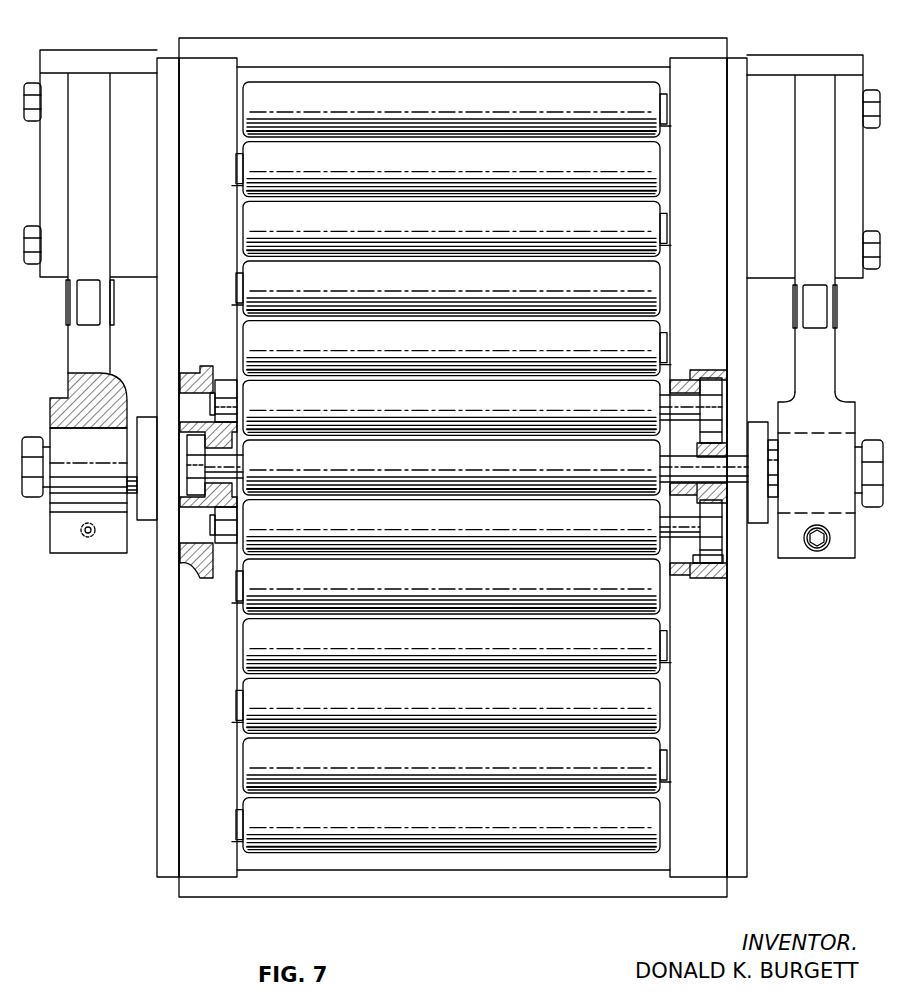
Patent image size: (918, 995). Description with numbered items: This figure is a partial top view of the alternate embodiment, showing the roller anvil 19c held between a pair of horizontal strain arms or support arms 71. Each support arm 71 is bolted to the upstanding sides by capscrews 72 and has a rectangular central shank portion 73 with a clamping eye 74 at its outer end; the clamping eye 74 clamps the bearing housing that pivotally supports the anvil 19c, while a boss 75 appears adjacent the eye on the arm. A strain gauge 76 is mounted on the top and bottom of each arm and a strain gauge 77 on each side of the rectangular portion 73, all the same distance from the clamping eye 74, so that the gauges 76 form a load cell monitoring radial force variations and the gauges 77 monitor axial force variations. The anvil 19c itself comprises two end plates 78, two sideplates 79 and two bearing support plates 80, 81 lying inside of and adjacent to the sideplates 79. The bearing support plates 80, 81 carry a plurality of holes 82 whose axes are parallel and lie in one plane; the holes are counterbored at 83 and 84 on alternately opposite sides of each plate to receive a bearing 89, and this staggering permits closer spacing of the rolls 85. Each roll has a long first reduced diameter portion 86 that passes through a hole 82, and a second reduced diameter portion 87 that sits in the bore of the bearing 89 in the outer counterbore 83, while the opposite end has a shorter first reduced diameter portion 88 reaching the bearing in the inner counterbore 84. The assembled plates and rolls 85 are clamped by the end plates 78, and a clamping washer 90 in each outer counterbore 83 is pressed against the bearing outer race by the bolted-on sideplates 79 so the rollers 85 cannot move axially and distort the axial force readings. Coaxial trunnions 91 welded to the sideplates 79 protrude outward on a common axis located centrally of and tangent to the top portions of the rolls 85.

The anvil 19c is at (152, 841).
The support arm 71 is at (68, 355).
The capscrews 72 is at (33, 226).
The rectangular central shank portion 73 is at (80, 347).
The clamping eye 74 is at (57, 543).
The hatched boss of mounting arm 75 is at (72, 445).
The strain gauge 76 is at (90, 305).
The strain gauge 77 is at (68, 310).
The end plates 78 is at (569, 52).
The sideplates 79 is at (160, 749).
The bearing support plate 80 is at (688, 66).
The bearing support plate 81 is at (219, 66).
The holes 82 is at (718, 470).
The outer counterbore 83 is at (180, 440).
The inner counterbore 84 is at (222, 378).
The rolls 85 is at (380, 272).
The first reduced diameter portion 86 is at (663, 563).
The second reduced diameter portion 87 is at (722, 553).
The shorter first reduced diameter portion 88 is at (245, 527).
The bearing 89 is at (710, 515).
The clamping washer 90 is at (722, 568).
The trunnions 91 is at (145, 512).